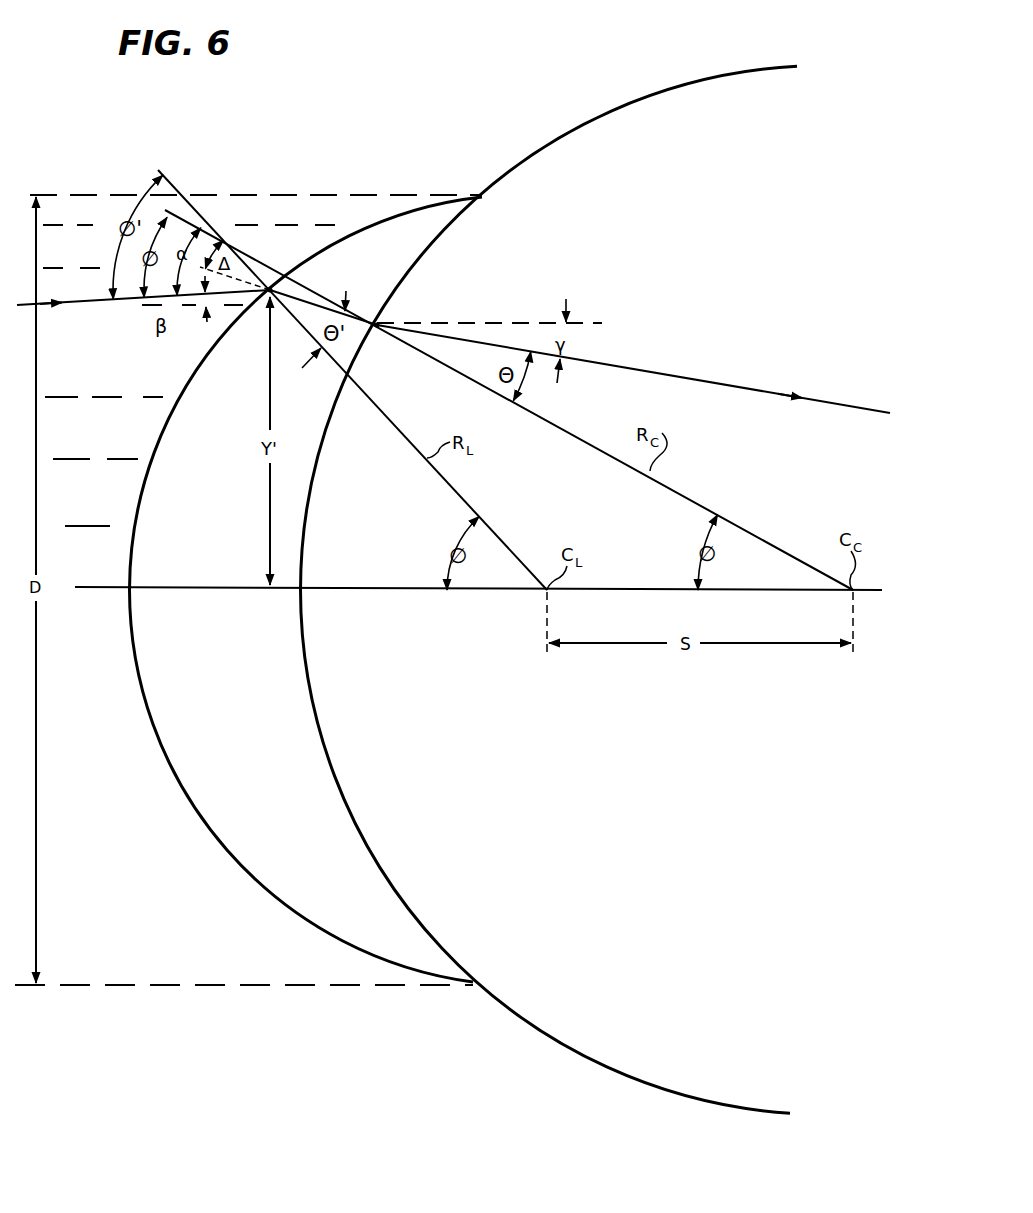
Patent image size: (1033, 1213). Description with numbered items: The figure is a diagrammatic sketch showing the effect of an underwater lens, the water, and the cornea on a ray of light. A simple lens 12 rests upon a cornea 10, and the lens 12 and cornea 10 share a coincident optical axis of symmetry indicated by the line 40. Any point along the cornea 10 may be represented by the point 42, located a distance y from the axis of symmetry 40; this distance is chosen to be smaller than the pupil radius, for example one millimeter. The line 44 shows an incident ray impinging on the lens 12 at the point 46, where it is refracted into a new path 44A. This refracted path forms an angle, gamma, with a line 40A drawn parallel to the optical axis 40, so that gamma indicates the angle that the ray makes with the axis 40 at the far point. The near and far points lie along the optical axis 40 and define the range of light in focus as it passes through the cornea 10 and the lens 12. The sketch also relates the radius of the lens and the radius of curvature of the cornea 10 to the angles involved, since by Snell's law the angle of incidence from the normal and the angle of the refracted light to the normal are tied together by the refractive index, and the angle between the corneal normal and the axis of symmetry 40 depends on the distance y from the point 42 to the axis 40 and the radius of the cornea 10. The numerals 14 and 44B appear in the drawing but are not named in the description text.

The cornea 10 is at (540, 197).
The lens 12 is at (368, 253).
The surface normal at lens point 14 is at (103, 217).
The optical axis of symmetry 40 is at (354, 588).
The line parallel to the optical axis 40A is at (133, 307).
The point along the cornea 42 is at (393, 322).
The incident ray 44 is at (118, 306).
The refracted path 44A is at (308, 304).
The ray refracted into cornea 44B is at (690, 378).
The point of refraction on the lens 46 is at (267, 297).